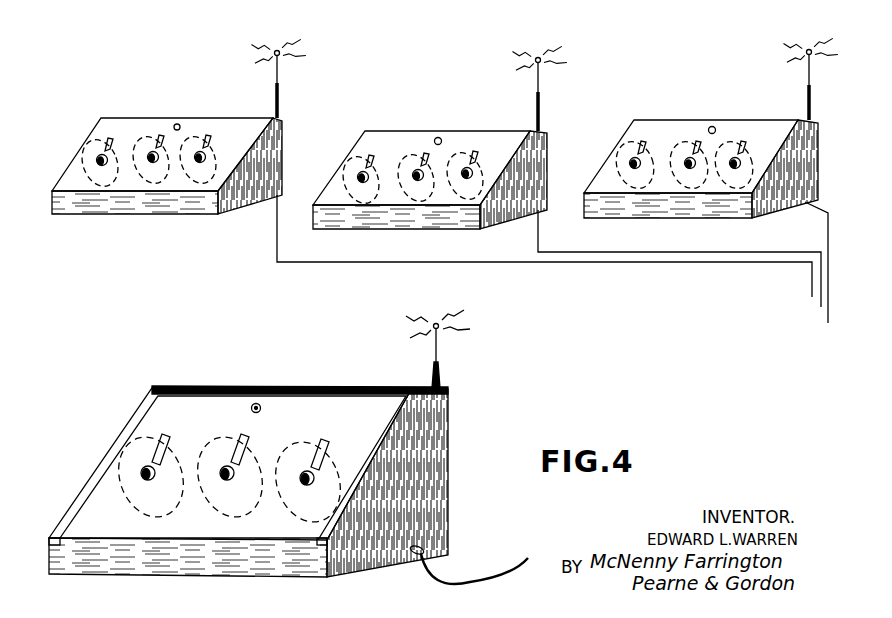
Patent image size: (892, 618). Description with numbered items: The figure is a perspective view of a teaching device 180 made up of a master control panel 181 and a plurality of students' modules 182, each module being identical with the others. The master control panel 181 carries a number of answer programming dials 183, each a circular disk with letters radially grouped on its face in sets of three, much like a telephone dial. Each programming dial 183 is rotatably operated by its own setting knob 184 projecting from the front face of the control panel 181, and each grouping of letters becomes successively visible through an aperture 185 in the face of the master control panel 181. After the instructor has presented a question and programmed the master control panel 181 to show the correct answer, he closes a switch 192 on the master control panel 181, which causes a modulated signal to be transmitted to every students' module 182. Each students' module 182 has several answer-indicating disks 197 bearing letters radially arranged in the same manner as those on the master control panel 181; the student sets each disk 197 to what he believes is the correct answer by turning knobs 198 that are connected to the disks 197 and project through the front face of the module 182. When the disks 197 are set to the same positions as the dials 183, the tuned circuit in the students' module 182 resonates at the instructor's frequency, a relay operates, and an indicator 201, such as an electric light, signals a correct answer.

The teaching device 180 is at (247, 260).
The master control panel 181 is at (336, 376).
The students' module 182 is at (112, 113).
The answer programming dial 183 is at (127, 502).
The setting knob 184 is at (141, 471).
The aperture 185 is at (156, 452).
The switch 192 is at (252, 404).
The answer-indicating disk 197 is at (95, 148).
The knob 198 is at (98, 160).
The indicator 201 is at (175, 124).